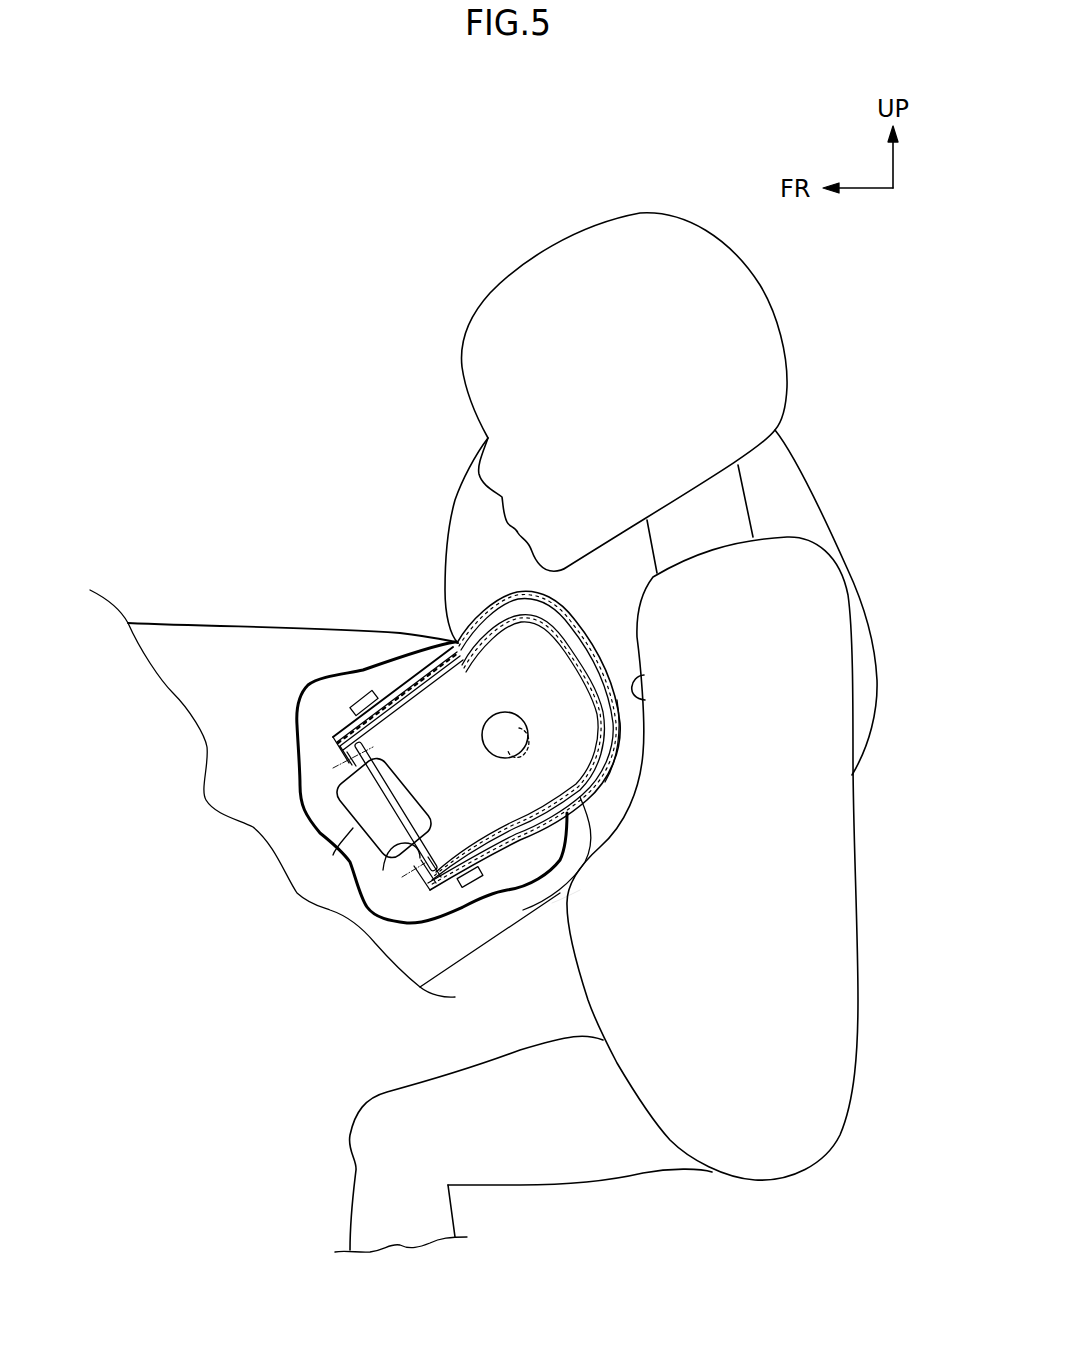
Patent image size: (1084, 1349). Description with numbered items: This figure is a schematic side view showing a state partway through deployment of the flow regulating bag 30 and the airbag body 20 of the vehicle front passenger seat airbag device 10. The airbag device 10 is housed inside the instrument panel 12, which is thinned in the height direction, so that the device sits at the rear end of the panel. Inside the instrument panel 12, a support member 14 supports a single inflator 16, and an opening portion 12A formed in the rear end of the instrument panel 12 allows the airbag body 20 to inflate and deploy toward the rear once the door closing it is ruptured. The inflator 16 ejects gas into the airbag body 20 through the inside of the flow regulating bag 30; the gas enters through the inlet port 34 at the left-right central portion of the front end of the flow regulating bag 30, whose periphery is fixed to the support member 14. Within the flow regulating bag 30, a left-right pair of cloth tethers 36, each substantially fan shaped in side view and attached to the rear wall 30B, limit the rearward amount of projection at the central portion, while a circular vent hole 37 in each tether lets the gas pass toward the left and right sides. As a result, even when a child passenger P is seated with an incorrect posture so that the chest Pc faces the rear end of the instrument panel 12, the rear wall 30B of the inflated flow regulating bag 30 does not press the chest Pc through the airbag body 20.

The vehicle front passenger seat airbag device 10 is at (550, 910).
The instrument panel 12 is at (275, 612).
The opening portion 12A is at (593, 798).
The support member 14 is at (333, 735).
The inflator 16 is at (347, 830).
The airbag body 20 is at (443, 508).
The flow regulating bag 30 is at (621, 736).
The rear wall 30B is at (620, 723).
The inlet port 34 is at (353, 828).
The tethers 36 is at (571, 680).
The vent hole 37 is at (523, 730).
The child passenger P is at (668, 208).
The chest Pc is at (645, 699).